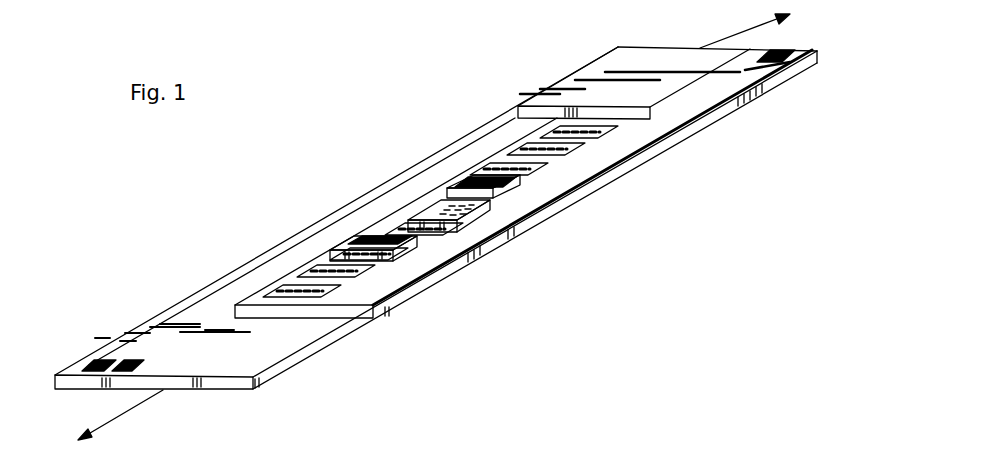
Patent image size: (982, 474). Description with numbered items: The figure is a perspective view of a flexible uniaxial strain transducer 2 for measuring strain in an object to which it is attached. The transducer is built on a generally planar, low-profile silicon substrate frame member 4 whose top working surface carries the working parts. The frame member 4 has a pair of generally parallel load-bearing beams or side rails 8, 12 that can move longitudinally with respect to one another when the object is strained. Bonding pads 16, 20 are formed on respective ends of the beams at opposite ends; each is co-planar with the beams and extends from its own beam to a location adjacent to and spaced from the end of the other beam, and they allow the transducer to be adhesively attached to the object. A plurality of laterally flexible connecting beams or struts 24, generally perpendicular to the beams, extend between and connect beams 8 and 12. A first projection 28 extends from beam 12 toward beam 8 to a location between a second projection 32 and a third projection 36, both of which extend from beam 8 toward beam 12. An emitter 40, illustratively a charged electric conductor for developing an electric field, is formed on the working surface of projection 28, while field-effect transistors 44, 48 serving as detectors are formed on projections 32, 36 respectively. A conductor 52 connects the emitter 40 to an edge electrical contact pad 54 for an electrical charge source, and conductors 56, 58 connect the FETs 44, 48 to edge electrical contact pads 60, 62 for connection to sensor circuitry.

The insertion direction arrow 2 is at (133, 412).
The silicon substrate frame member 4 is at (476, 93).
The load-bearing beam 8 is at (487, 176).
The load-bearing beam 12 is at (596, 170).
The bonding pad 16 is at (625, 62).
The bonding pad 20 is at (260, 348).
The connecting beams or struts 24 is at (370, 263).
The first projection 28 is at (398, 232).
The second projection 32 is at (440, 279).
The third projection 36 is at (590, 180).
The emitter 40 is at (477, 246).
The field-effect transistor 44 is at (362, 240).
The field-effect transistor 48 is at (473, 177).
The conductor 52 is at (700, 106).
The edge electrical contact pad 54 is at (777, 50).
The conductor 56 is at (268, 268).
The conductor 58 is at (290, 250).
The edge electrical contact pad 60 is at (125, 375).
The edge electrical contact pad 62 is at (100, 362).